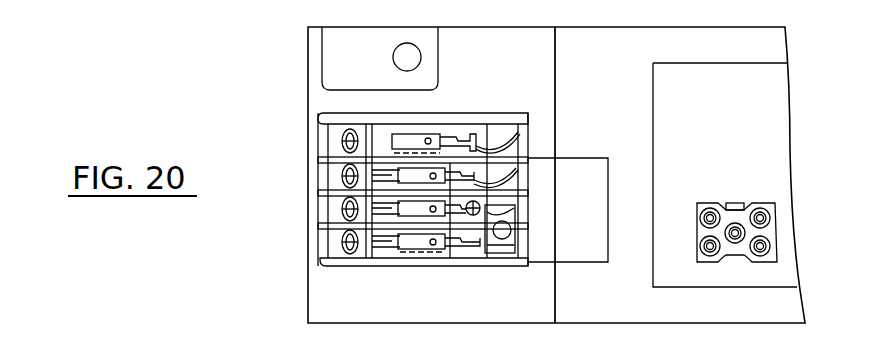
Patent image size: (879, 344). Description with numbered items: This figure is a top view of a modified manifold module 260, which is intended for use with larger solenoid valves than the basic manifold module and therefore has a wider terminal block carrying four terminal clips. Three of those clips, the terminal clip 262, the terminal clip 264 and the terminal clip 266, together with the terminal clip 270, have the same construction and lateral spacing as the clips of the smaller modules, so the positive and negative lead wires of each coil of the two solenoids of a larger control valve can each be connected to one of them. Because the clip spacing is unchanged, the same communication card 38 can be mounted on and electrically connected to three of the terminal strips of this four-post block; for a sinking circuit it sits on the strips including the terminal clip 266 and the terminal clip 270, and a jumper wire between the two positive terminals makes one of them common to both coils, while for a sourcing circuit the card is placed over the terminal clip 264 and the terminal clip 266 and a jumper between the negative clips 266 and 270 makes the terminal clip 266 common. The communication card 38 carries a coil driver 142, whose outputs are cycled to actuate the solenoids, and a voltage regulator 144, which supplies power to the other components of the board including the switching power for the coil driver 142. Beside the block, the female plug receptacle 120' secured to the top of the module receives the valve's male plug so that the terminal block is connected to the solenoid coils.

The modified manifold module 260 is at (300, 33).
The terminal clip 262 is at (316, 119).
The terminal clip 264 is at (378, 140).
The terminal clip 266 is at (465, 183).
The terminal clip 270 is at (410, 252).
The coil driver 142 is at (428, 258).
The voltage regulator 144 is at (498, 254).
The communication card 38 is at (568, 260).
The female plug receptacle 120' is at (737, 210).